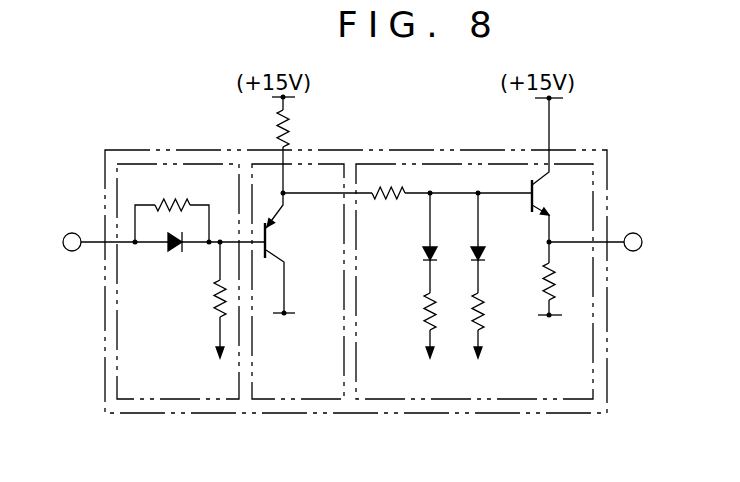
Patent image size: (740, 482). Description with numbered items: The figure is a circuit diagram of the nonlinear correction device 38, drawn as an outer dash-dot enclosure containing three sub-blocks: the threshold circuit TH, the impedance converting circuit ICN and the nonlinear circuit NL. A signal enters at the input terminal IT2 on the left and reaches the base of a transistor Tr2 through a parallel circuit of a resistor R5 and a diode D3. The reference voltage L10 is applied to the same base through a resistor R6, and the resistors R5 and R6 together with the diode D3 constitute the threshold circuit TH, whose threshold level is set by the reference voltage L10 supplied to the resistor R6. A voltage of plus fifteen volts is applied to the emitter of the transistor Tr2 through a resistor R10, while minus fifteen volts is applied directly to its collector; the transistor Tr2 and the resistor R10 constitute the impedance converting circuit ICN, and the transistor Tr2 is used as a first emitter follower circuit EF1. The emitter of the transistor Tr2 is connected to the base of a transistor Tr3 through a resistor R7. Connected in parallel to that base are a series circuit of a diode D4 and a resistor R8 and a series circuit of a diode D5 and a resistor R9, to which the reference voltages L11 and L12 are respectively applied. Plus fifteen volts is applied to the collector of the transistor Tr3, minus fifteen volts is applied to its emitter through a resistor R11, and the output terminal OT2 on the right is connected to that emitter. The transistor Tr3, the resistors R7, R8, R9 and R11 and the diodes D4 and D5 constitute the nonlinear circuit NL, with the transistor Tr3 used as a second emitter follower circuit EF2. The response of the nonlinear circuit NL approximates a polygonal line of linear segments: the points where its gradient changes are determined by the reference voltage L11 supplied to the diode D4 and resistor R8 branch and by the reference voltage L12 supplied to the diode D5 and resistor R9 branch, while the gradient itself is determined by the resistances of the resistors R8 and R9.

The nonlinear correction device 38 is at (447, 150).
The threshold circuit TH is at (167, 400).
The impedance converting circuit ICN is at (322, 400).
The nonlinear circuit NL is at (460, 400).
The input terminal IT2 is at (72, 233).
The output terminal OT2 is at (632, 252).
The resistor R5 is at (170, 204).
The diode D3 is at (175, 245).
The resistor R6 is at (215, 310).
The reference voltage L10 is at (217, 353).
The resistor R10 is at (290, 118).
The transistor Tr2 is at (280, 237).
The first emitter follower circuit EF1 is at (289, 338).
The resistor R7 is at (381, 200).
The diode D4 is at (426, 258).
The resistor R8 is at (425, 318).
The reference voltage L11 is at (431, 360).
The diode D5 is at (483, 258).
The resistor R9 is at (484, 318).
The reference voltage L12 is at (482, 360).
The resistor R11 is at (545, 265).
The transistor Tr3 is at (550, 188).
The second emitter follower circuit EF2 is at (567, 342).